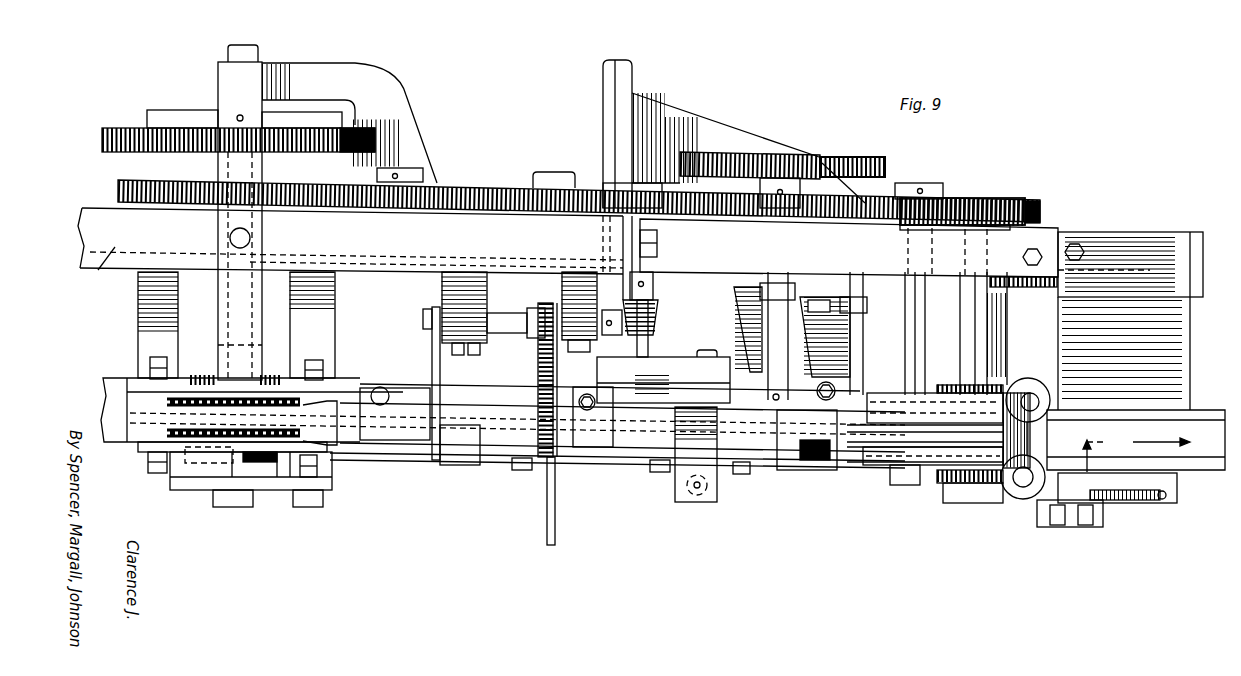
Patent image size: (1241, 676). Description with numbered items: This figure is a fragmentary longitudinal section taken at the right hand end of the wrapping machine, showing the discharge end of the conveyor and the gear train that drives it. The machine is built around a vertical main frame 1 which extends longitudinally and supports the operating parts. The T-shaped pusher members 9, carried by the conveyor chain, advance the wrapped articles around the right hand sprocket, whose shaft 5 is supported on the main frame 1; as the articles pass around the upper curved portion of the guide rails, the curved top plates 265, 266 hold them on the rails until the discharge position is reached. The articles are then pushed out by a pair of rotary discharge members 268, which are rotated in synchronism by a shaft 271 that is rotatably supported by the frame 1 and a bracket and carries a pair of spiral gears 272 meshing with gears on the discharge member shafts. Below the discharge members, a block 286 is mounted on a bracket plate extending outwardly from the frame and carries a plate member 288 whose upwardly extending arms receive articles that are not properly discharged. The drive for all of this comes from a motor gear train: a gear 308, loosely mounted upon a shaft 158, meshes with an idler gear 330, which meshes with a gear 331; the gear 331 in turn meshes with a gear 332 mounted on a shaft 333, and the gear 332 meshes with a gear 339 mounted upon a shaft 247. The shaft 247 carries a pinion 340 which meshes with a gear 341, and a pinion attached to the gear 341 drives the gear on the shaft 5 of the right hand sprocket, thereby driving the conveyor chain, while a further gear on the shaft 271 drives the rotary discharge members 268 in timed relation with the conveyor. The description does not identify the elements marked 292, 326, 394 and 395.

The vertical main frame 1 is at (350, 252).
The shaft 5 is at (923, 312).
The pusher member 9 is at (1032, 441).
The shaft 158 is at (225, 323).
The shaft 247 is at (795, 248).
The curved top plate 265 is at (888, 462).
The curved top plate 266 is at (927, 463).
The rotary discharge member 268 is at (1043, 393).
The shaft 271 is at (988, 352).
The spiral gear 272 is at (948, 386).
The block 286 is at (1077, 513).
The plate member 288 is at (1038, 530).
The plate 292 is at (1170, 358).
The gear 308 is at (120, 192).
The bracket 326 is at (408, 112).
The idler gear 330 is at (449, 188).
The gear 331 is at (510, 188).
The gear 332 is at (590, 190).
The shaft 333 is at (657, 323).
The gear 339 is at (745, 195).
The pinion 340 is at (799, 160).
The gear 341 is at (855, 151).
The gear end cap 394 is at (1030, 211).
The pinion 395 is at (1003, 199).